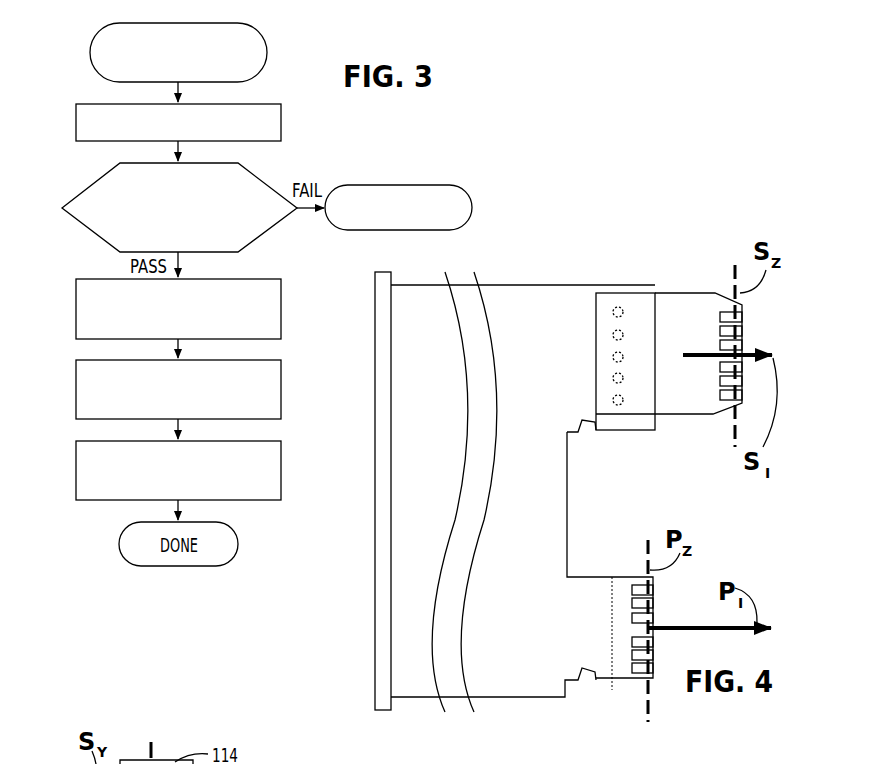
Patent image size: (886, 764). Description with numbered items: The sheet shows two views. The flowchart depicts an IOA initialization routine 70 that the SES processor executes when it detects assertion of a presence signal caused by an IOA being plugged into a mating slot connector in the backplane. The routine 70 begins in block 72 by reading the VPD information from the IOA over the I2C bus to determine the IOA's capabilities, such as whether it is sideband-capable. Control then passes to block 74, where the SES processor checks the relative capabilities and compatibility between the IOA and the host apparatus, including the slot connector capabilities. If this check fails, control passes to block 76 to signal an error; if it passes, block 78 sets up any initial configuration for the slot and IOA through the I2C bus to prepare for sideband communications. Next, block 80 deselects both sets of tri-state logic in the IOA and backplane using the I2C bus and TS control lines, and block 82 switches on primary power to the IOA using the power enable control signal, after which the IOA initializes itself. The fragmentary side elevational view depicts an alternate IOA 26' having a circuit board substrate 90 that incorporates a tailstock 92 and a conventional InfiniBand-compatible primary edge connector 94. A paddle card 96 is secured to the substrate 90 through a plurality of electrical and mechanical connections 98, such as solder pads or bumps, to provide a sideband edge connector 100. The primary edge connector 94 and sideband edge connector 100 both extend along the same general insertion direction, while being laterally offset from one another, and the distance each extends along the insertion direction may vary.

In FIG. 3, the IOA initialization routine 70 is at (94, 30).
In FIG. 3, the read VPD block 72 is at (80, 103).
In FIG. 3, the capability and compatibility check block 74 is at (105, 175).
In FIG. 3, the signal error block 76 is at (398, 185).
In FIG. 3, the set up configuration block 78 is at (83, 313).
In FIG. 3, the deselect tri-state logic block 80 is at (83, 385).
In FIG. 3, the apply power block 82 is at (83, 467).
In FIG. 4, the alternate IOA 26' is at (523, 472).
In FIG. 4, the circuit board substrate 90 is at (562, 542).
In FIG. 4, the tailstock 92 is at (383, 550).
In FIG. 4, the primary edge connector 94 is at (642, 674).
In FIG. 4, the paddle card 96 is at (683, 413).
In FIG. 4, the electrical and mechanical connections 98 is at (614, 338).
In FIG. 4, the sideband edge connector 100 is at (730, 394).